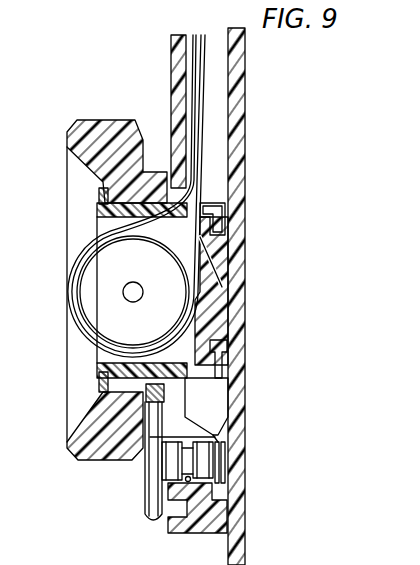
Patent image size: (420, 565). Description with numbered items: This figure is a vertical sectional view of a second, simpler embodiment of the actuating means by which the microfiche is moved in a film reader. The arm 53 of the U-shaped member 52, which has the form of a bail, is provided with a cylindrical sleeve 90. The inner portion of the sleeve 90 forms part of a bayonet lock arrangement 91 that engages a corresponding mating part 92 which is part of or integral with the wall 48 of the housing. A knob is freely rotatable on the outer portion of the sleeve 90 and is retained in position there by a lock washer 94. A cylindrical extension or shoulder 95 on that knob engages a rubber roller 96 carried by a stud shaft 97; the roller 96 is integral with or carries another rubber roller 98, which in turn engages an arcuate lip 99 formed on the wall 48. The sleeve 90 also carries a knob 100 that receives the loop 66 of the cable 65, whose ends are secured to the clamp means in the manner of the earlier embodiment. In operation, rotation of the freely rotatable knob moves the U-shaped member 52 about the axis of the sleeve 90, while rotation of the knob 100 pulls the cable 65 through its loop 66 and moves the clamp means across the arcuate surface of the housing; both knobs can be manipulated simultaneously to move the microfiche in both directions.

The side wall 48 is at (240, 121).
The U-shaped member 52 is at (166, 71).
The arm 53 is at (175, 525).
The cable 65 is at (210, 78).
The loop 66 is at (198, 262).
The cylindrical sleeve 90 is at (99, 205).
The bayonet lock arrangement 91 is at (222, 223).
The mating part 92 is at (232, 347).
The lock washer 94 is at (99, 382).
The cylindrical extension or shoulder 95 is at (167, 390).
The rubber roller 96 is at (147, 500).
The stud shaft 97 is at (203, 448).
The rubber roller 98 is at (221, 470).
The arcuate lip 99 is at (218, 436).
The knob 100 is at (148, 331).